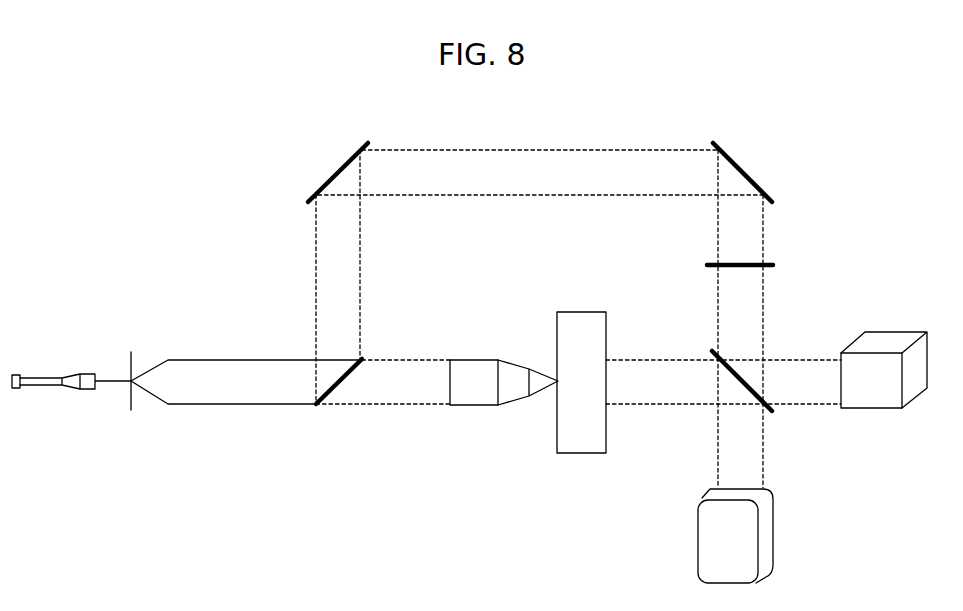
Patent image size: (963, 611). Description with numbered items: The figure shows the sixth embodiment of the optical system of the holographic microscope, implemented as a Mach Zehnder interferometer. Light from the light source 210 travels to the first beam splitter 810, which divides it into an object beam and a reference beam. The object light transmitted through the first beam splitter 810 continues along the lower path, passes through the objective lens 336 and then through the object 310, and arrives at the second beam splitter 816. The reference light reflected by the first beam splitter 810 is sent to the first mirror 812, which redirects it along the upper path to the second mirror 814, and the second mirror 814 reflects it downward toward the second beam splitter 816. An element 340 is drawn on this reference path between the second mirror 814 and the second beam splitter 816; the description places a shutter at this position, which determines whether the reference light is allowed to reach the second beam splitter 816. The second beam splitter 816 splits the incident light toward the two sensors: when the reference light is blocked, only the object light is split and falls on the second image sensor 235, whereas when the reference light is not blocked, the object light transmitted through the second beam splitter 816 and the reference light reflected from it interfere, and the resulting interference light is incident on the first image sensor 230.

The light source 210 is at (40, 377).
The first beam splitter 810 is at (347, 388).
The first mirror 812 is at (333, 170).
The second mirror 814 is at (745, 170).
The filter 340 is at (752, 263).
The second beam splitter 816 is at (748, 378).
The objective lens 336 is at (480, 406).
The object 310 is at (588, 454).
The first image sensor 230 is at (872, 409).
The second image sensor 235 is at (774, 538).